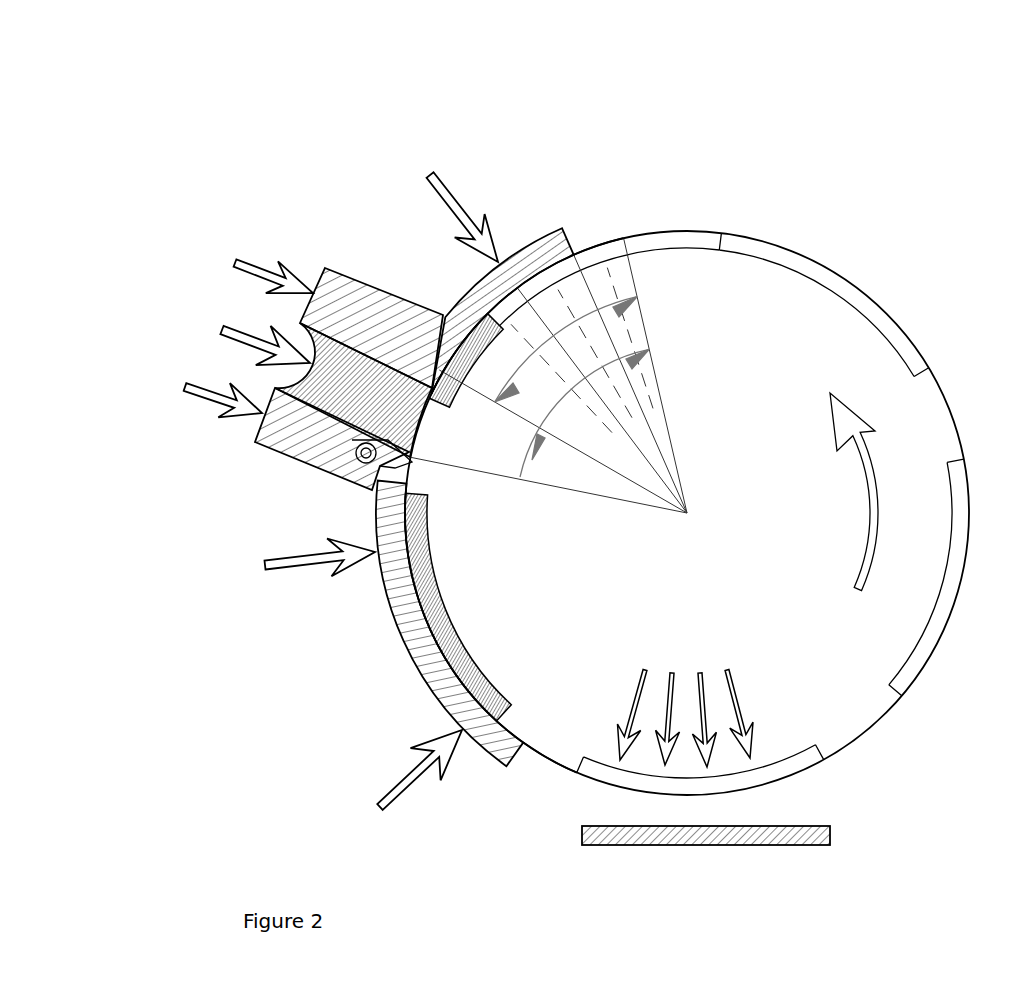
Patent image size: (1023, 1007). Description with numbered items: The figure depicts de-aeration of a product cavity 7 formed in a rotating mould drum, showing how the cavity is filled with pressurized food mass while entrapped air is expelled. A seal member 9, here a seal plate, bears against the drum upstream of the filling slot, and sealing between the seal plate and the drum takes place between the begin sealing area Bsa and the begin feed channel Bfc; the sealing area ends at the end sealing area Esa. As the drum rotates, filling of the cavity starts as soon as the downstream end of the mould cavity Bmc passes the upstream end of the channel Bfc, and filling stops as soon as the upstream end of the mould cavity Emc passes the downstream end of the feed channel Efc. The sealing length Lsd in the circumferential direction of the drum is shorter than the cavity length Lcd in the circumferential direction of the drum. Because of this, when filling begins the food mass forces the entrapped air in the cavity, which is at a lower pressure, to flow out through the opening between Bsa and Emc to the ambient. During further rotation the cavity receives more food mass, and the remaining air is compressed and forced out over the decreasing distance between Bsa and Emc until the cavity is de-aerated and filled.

The product cavity 7 is at (530, 290).
The seal member 9 is at (403, 597).
The begin feed channel Bfc is at (351, 233).
The begin mould cavity seen in rotational direction drum Bmc is at (332, 293).
The end feed channel Efc is at (322, 333).
The begin sealing area Bsa is at (582, 236).
The end mould cavity seen in rotational direction drum Emc is at (672, 190).
The end sealing area Esa is at (501, 796).
The cavity length in circumferential direction mould drum Lcd is at (566, 349).
The sealing length in upstream sealing area mould drum Lsd is at (584, 413).